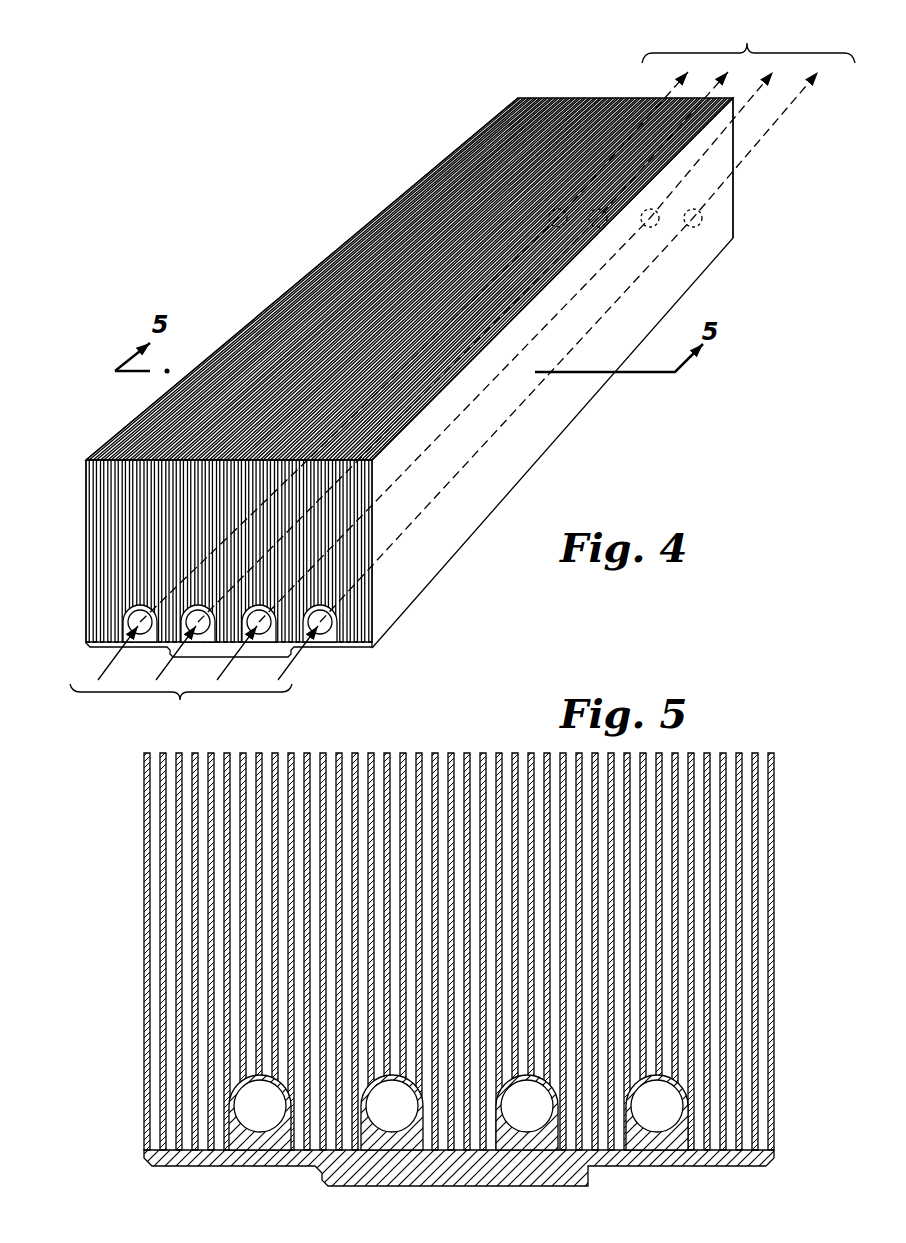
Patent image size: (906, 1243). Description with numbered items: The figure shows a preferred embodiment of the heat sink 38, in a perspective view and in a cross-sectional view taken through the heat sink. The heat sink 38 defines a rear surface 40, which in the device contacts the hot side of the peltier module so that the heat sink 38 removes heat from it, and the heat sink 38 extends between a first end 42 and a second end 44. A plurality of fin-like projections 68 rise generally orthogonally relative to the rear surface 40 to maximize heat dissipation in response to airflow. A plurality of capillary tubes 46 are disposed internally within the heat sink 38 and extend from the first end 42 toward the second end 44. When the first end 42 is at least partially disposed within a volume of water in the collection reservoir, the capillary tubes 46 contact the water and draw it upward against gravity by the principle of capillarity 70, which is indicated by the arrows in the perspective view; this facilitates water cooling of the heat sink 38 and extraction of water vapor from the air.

In FIG. 4, the heat sink 38 is at (300, 198).
In FIG. 5, the heat sink 38 is at (788, 732).
In FIG. 4, the rear surface 40 is at (717, 256).
In FIG. 5, the rear surface 40 is at (708, 1167).
In FIG. 4, the first end 42 is at (388, 617).
In FIG. 4, the second end 44 is at (727, 228).
In FIG. 4, the capillary tube 46 is at (196, 634).
In FIG. 5, the capillary tube 46 is at (648, 1117).
In FIG. 4, the fin-like projections 68 is at (132, 440).
In FIG. 5, the fin-like projections 68 is at (771, 754).
In FIG. 4, the capillarity 70 is at (462, 377).